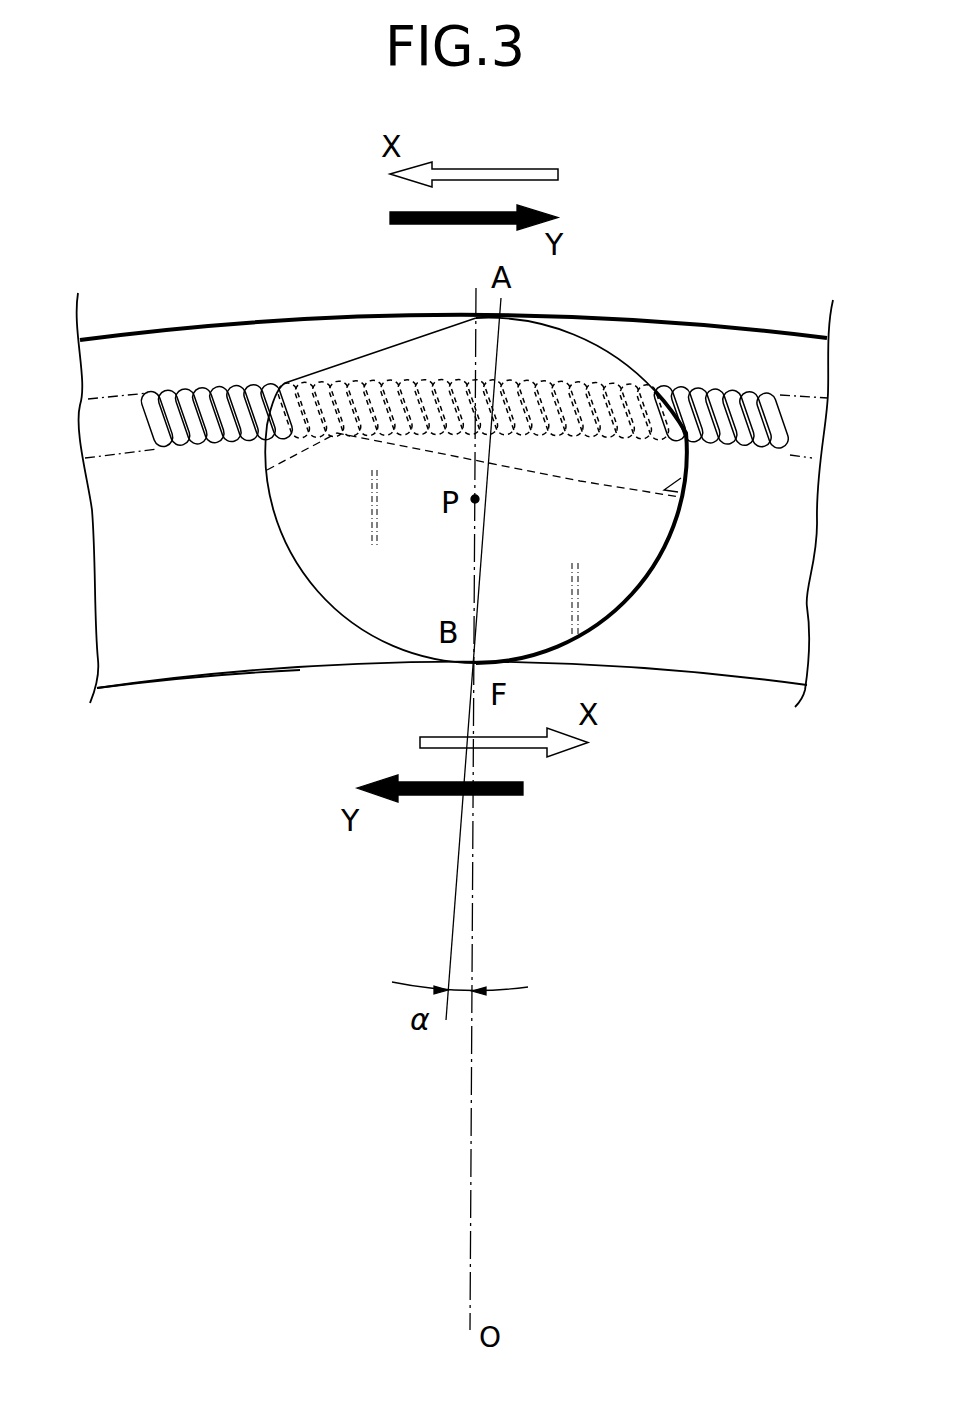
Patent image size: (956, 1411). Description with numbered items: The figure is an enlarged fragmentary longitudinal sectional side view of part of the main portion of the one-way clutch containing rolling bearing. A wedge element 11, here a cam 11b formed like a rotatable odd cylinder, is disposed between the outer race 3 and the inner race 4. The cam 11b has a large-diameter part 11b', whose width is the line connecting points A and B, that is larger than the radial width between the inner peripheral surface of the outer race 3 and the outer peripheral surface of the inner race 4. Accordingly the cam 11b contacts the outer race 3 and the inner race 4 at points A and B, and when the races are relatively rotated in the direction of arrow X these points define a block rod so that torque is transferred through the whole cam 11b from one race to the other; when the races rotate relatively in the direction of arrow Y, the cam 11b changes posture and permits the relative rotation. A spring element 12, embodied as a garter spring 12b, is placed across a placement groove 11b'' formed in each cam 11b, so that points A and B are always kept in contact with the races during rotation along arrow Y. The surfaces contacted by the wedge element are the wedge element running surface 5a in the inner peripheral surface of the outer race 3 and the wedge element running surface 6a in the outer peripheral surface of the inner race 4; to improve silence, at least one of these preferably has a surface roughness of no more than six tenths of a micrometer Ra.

The outer race 3 is at (254, 288).
The inner race 4 is at (322, 700).
The wedge element running surface 5a is at (677, 326).
The wedge element running surface 6a is at (160, 683).
The wedge element 11 is at (660, 585).
The cam 11b is at (347, 523).
The large-diameter part 11b' is at (565, 322).
The placement groove 11b'' is at (530, 475).
The spring element 12 is at (190, 460).
The garter spring 12b is at (172, 388).